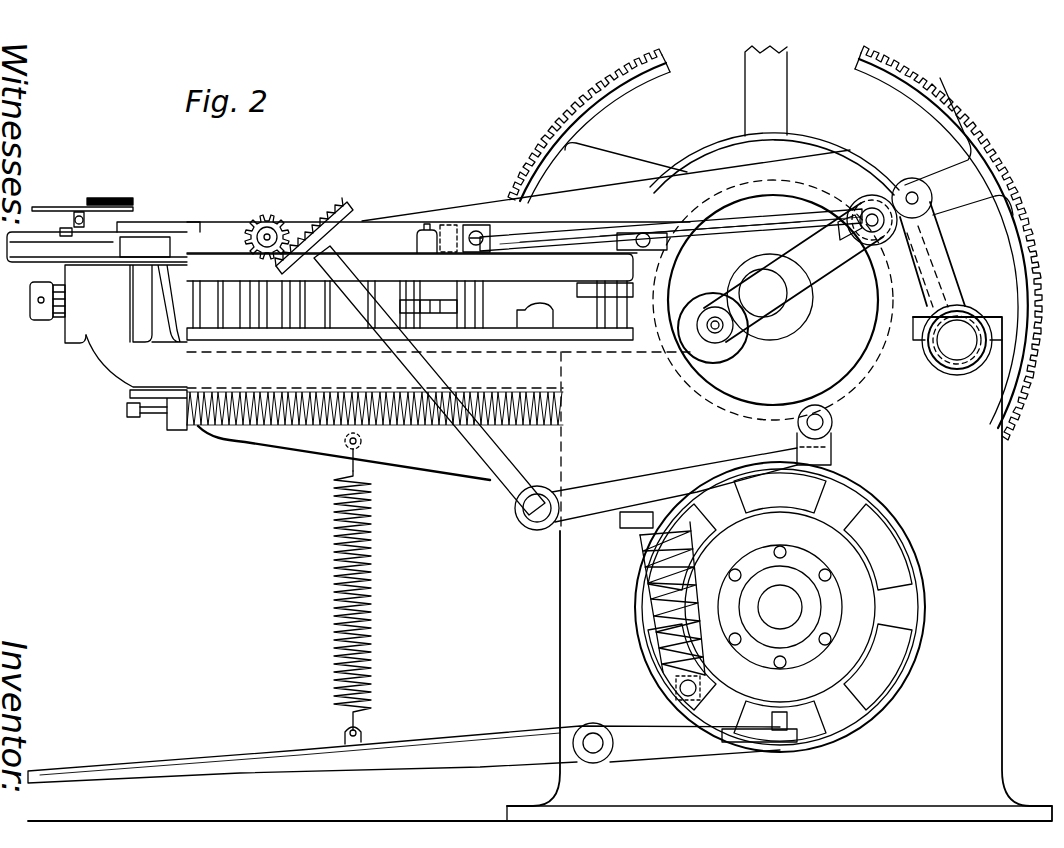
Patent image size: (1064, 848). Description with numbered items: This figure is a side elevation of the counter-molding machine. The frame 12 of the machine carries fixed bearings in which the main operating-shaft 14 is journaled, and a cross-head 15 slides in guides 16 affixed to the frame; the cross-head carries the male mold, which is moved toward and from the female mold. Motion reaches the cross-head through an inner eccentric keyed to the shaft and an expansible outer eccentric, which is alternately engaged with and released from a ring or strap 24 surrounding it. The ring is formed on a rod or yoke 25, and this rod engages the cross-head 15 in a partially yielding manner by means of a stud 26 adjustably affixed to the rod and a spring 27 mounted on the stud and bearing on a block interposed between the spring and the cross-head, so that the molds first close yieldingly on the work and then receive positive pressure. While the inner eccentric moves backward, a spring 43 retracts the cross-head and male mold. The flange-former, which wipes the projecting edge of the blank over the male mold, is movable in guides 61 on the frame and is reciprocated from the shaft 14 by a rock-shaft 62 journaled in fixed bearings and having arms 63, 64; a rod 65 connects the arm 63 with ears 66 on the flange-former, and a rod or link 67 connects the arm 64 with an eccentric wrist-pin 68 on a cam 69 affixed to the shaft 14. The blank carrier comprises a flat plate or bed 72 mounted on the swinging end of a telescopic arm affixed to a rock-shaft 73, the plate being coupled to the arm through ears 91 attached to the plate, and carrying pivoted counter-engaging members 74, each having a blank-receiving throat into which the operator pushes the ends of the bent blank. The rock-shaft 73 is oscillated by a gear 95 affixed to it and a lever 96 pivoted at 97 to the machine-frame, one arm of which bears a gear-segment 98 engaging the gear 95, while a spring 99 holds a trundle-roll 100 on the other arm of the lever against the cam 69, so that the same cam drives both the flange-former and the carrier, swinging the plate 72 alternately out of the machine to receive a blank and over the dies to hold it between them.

The frame 12 is at (990, 493).
The main operating-shaft 14 is at (790, 318).
The cross-head 15 is at (323, 313).
The guides 16 is at (298, 318).
The ring or strap 24 is at (873, 162).
The rod or yoke 25 is at (640, 185).
The stud 26 is at (42, 320).
The spring 27 is at (110, 360).
The spring 43 is at (200, 432).
The guides 61 is at (395, 258).
The rock-shaft 62 is at (957, 356).
The arm 63 is at (935, 255).
The arm 64 is at (938, 300).
The rod 65 is at (700, 215).
The ears 66 is at (480, 226).
The rod or link 67 is at (822, 265).
The eccentric wrist-pin 68 is at (712, 335).
The cam 69 is at (713, 395).
The plate or bed 72 is at (50, 207).
The rock-shaft 73 is at (280, 230).
The counter-engaging members 74 is at (95, 199).
The ears 91 is at (77, 211).
The gear 95 is at (267, 227).
The lever 96 is at (480, 455).
The pivot 97 is at (533, 517).
The gear-segment 98 is at (336, 208).
The spring 99 is at (645, 556).
The trundle-roll 100 is at (833, 422).